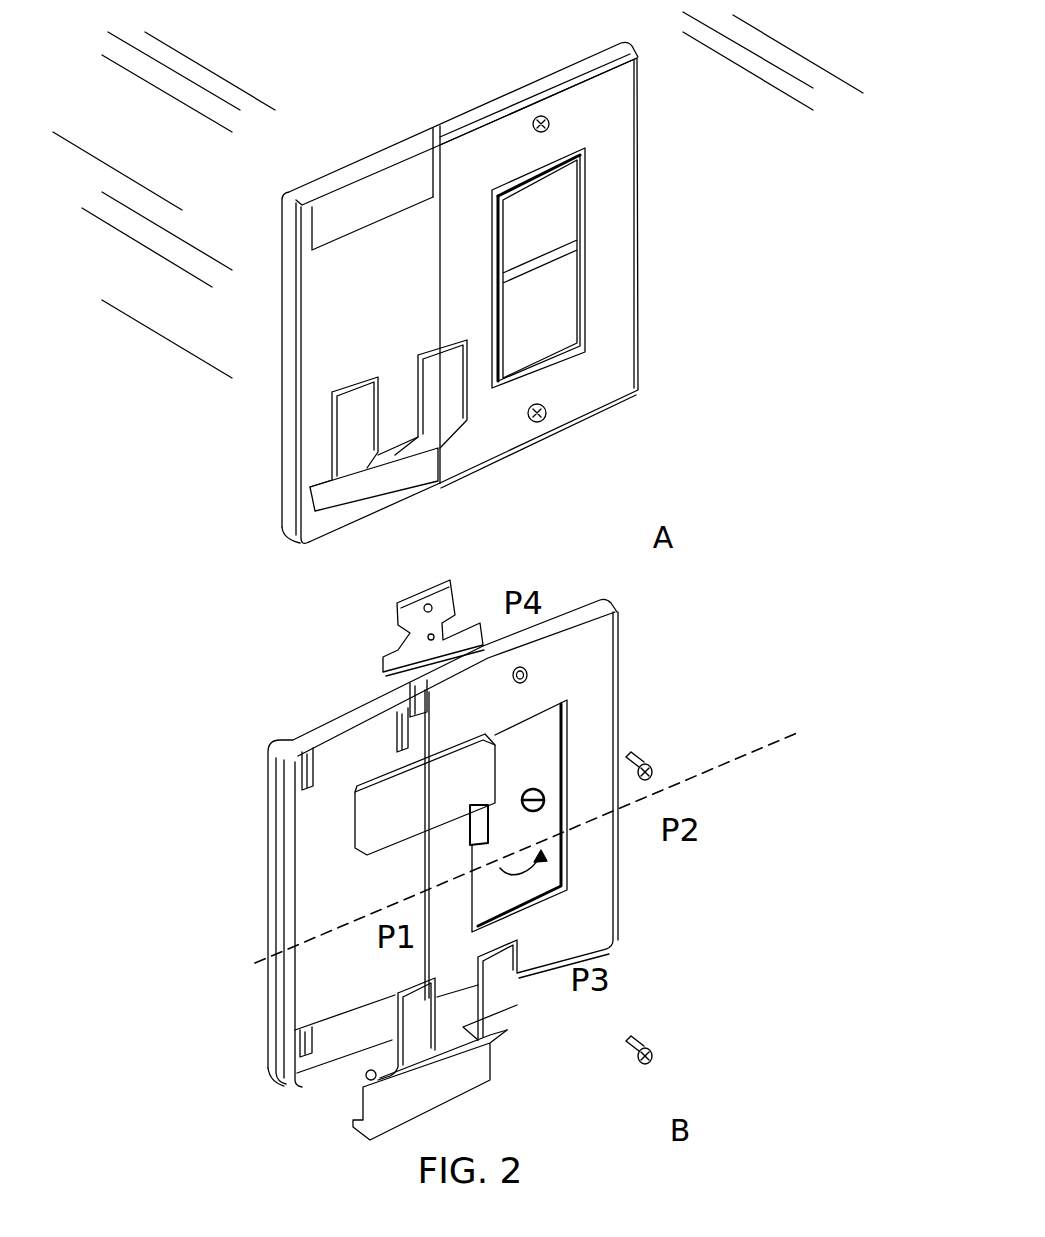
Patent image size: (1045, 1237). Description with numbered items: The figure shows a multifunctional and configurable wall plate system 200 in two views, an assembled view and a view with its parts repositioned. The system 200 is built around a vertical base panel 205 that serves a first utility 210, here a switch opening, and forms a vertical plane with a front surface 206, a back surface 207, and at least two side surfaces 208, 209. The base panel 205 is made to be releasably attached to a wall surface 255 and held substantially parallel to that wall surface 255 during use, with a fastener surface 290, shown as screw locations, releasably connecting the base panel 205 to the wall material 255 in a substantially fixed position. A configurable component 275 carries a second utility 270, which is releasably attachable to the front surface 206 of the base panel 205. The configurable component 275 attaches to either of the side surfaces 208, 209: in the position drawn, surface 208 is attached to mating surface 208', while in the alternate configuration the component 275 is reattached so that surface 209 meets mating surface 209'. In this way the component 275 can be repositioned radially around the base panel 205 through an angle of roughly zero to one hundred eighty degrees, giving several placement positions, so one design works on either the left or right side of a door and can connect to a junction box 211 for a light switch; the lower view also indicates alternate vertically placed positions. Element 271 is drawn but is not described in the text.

The wall plate system 200 is at (856, 228).
The vertical base panel 205 is at (634, 50).
The front surface 206 is at (607, 93).
The back surface 207 is at (480, 105).
The side surface 208 is at (425, 554).
The mating surface 208' is at (413, 644).
The side surface 209 is at (650, 500).
The mating surface 209' is at (265, 645).
The first utility 210 is at (537, 217).
The junction box 211 is at (413, 666).
The wall surface 255 is at (458, 195).
The second utility 270 is at (357, 430).
The faceplate section 271 is at (362, 200).
The configurable component 275 is at (363, 325).
The fastener surface 290 is at (550, 410).